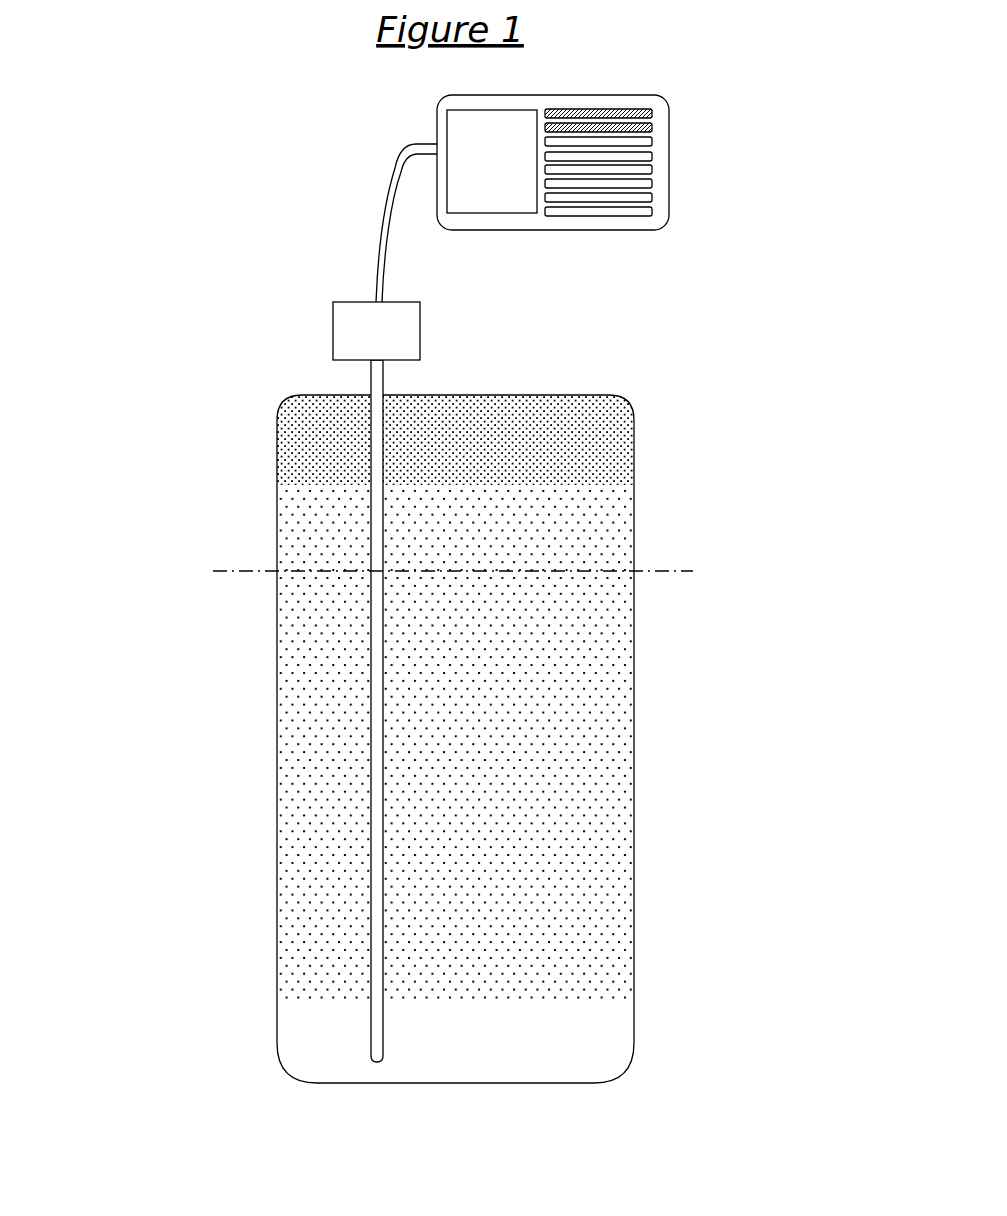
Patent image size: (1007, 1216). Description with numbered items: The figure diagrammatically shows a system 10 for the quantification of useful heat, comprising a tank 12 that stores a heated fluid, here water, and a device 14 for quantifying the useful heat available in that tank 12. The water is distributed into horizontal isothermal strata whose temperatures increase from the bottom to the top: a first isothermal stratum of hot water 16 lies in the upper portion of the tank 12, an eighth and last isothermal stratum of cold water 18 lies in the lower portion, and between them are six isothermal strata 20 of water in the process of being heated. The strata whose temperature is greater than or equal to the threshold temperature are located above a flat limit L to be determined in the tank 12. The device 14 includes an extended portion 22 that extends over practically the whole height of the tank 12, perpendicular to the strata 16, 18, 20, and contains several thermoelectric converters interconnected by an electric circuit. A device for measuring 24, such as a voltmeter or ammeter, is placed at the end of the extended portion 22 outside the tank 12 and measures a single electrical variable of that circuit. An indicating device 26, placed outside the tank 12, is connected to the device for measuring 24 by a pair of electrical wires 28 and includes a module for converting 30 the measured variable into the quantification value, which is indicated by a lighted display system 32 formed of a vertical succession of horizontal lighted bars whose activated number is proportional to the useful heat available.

The system for quantification of useful heat 10 is at (128, 474).
The tank 12 is at (278, 825).
The device for quantification of useful heat 14 is at (230, 90).
The first isothermal stratum of hot water 16 is at (455, 440).
The isothermal stratum of cold water 18 is at (455, 1041).
The isothermal strata of water in the process of being heated 20 is at (455, 742).
The extended portion 22 is at (371, 386).
The device for measuring 24 is at (376, 331).
The indicating device 26 is at (437, 128).
The pair of electrical wires 28 is at (377, 217).
The module for converting 30 is at (492, 161).
The lighted display system 32 is at (652, 113).
The flat limit L is at (437, 572).